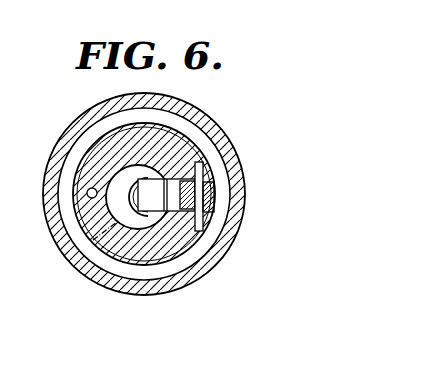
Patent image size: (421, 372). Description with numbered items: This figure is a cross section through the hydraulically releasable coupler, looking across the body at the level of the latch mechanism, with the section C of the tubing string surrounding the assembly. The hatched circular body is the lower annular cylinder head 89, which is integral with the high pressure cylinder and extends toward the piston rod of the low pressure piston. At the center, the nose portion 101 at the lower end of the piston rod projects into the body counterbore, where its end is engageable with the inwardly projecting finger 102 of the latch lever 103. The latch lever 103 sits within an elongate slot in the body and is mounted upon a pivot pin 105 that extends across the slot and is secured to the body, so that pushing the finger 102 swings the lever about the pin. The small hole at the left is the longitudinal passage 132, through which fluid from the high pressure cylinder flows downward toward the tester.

The tubing string section C is at (207, 130).
The lower annular cylinder head 89 is at (97, 150).
The nose portion 101 is at (88, 252).
The inwardly projecting finger 102 is at (160, 216).
The latch lever 103 is at (220, 201).
The pivot pin 105 is at (198, 172).
The longitudinal passage 132 is at (87, 193).